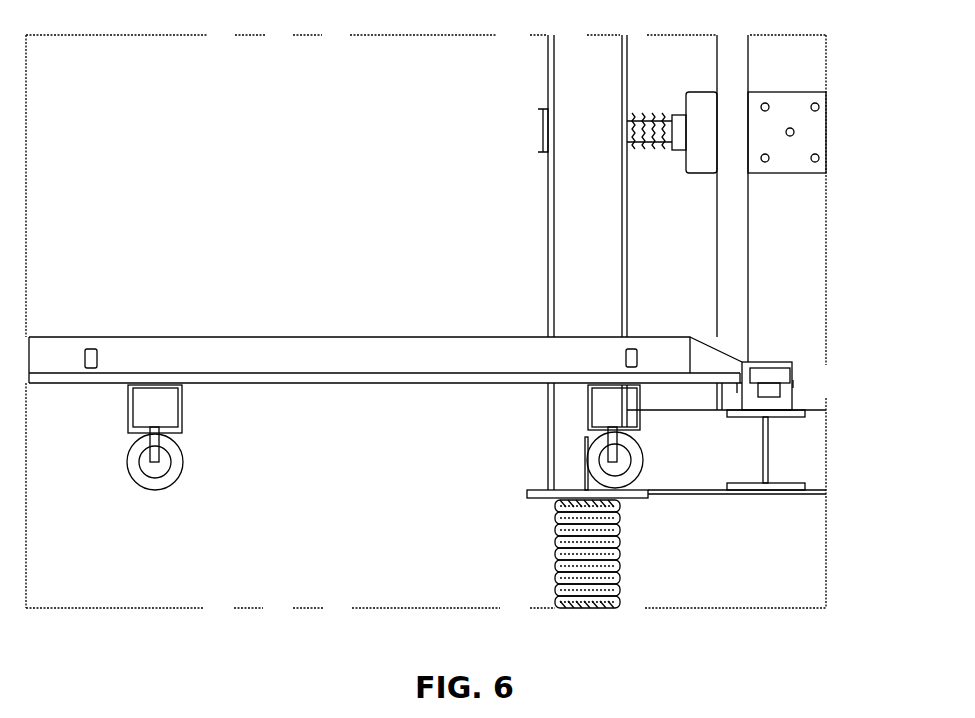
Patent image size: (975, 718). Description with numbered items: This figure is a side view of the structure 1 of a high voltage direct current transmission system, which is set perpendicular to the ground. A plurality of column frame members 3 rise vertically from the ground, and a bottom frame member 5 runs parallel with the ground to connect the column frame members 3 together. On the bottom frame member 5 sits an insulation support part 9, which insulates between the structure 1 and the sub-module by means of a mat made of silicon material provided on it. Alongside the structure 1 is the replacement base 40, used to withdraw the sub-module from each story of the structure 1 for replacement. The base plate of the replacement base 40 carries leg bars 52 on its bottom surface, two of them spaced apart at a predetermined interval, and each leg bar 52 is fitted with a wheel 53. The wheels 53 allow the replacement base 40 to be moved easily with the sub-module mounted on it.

The structure 1 is at (512, 100).
The column frame member 3 is at (548, 212).
The replacement base 40 is at (273, 318).
The leg bar 52 is at (183, 408).
The wheel 53 is at (177, 470).
The insulation support part 9 is at (792, 372).
The bottom frame member 5 is at (807, 442).